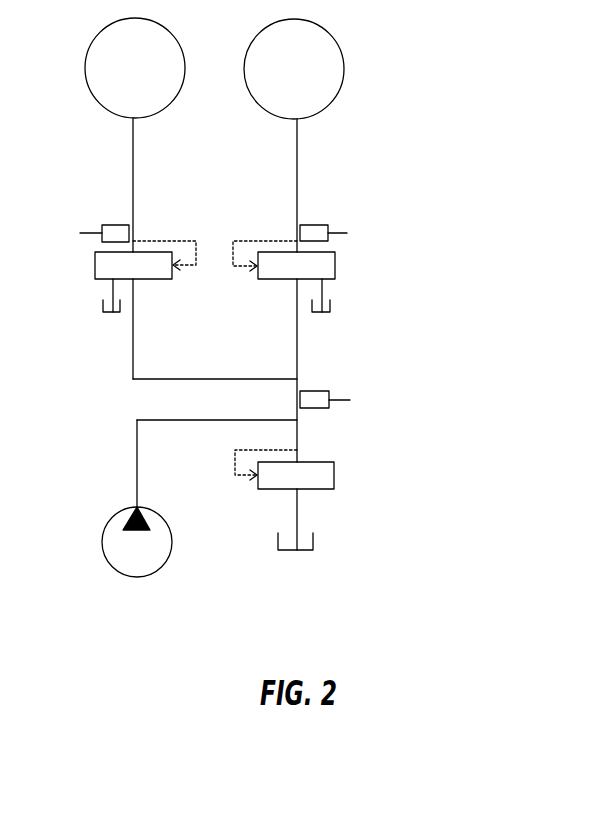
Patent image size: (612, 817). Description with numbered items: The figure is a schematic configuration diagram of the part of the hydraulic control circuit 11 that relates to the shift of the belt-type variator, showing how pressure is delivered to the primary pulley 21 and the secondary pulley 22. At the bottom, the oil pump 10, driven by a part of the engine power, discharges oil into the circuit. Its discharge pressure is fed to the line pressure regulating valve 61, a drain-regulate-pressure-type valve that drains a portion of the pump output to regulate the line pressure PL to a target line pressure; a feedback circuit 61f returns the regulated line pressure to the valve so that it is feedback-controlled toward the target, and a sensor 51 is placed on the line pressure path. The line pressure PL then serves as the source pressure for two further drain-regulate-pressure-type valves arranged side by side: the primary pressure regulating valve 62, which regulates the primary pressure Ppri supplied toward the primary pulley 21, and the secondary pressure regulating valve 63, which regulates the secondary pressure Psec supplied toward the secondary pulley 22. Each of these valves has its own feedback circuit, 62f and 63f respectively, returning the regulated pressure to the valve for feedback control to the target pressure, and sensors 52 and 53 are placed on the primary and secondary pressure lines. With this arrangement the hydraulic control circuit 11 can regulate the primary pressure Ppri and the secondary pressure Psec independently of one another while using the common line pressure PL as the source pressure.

The oil pump 10 is at (113, 550).
The hydraulic control circuit 11 is at (446, 527).
The primary pulley 21 is at (87, 52).
The secondary pulley 22 is at (343, 47).
The line pressure sensor 51 is at (314, 394).
The primary pressure sensor 52 is at (113, 224).
The secondary pressure sensor 53 is at (313, 224).
The line pressure regulating valve 61 is at (320, 476).
The feedback circuit 61f is at (233, 468).
The primary pressure regulating valve 62 is at (120, 268).
The feedback circuit 62f is at (177, 241).
The secondary pressure regulating valve 63 is at (320, 264).
The feedback circuit 63f is at (244, 241).